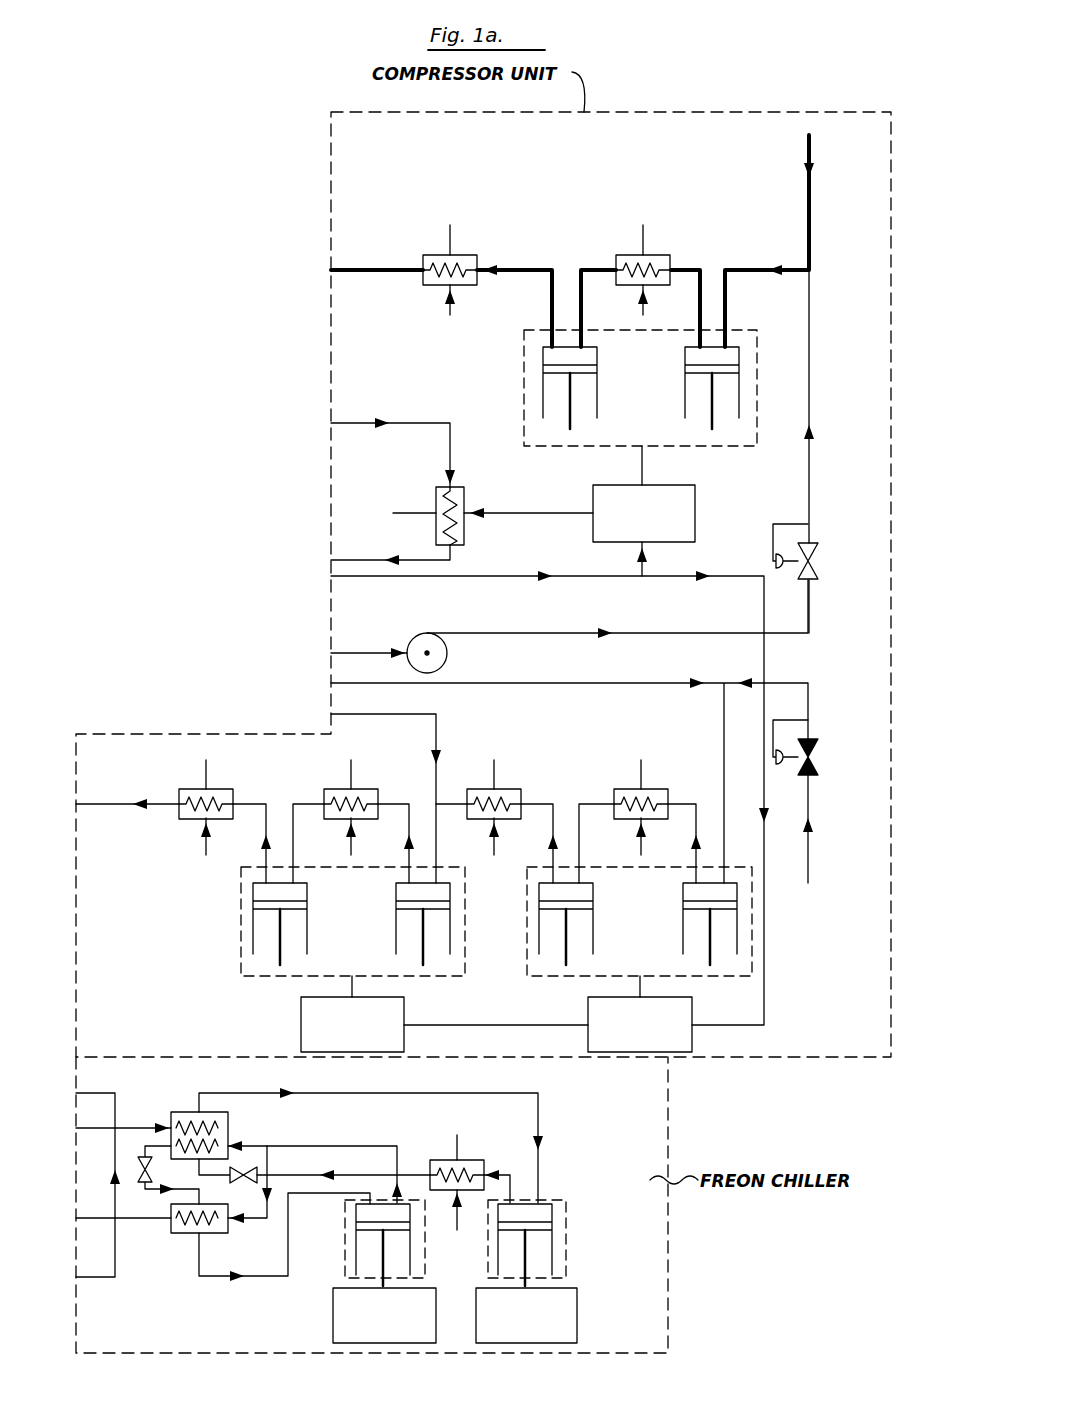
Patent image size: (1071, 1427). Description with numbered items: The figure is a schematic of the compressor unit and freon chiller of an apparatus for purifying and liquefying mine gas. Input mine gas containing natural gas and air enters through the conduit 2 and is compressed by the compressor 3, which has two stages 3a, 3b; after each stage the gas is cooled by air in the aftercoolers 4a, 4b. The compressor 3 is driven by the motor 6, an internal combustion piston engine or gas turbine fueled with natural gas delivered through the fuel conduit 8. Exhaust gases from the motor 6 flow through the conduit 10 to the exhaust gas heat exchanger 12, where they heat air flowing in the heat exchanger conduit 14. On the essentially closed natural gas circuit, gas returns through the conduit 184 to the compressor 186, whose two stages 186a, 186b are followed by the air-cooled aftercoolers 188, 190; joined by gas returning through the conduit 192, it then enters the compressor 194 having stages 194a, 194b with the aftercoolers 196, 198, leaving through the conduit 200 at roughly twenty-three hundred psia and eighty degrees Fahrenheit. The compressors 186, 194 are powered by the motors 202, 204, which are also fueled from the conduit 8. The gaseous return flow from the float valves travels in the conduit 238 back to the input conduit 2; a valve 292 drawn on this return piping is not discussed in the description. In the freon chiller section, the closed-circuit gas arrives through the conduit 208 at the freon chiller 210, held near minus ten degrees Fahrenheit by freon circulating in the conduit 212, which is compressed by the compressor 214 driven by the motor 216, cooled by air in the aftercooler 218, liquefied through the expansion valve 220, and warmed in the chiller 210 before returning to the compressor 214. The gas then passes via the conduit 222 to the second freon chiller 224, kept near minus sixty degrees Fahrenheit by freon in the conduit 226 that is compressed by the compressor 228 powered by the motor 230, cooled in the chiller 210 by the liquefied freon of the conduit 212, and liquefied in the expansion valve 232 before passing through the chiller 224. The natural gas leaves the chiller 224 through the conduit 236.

The conduit 2 is at (374, 268).
The compressor 3 is at (751, 328).
The compressor stage 3a is at (686, 397).
The compressor stage 3b is at (597, 386).
The aftercooler 4a is at (660, 256).
The aftercooler 4b is at (465, 256).
The motor 6 is at (693, 489).
The fuel conduit 8 is at (592, 576).
The conduit 10 is at (516, 515).
The exhaust gas heat exchanger 12 is at (465, 496).
The heat exchanger conduit 14 is at (452, 430).
The conduit 184 is at (385, 683).
The compressor 186 is at (526, 935).
The compressor stage 186a is at (683, 933).
The compressor stage 186b is at (601, 922).
The aftercooler 188 is at (660, 790).
The aftercooler 190 is at (513, 788).
The conduit 192 is at (420, 712).
The compressor 194 is at (236, 933).
The compressor stage 194a is at (397, 933).
The compressor stage 194b is at (307, 922).
The aftercooler 196 is at (338, 788).
The aftercooler 198 is at (188, 822).
The conduit 200 is at (98, 803).
The motor 202 is at (582, 1008).
The motor 204 is at (405, 1008).
The conduit 208 is at (130, 1125).
The freon chiller 210 is at (228, 1118).
The conduit 212 is at (408, 1092).
The compressor 214 is at (553, 1240).
The motor 216 is at (578, 1304).
The aftercooler 218 is at (473, 1158).
The expansion valve 220 is at (253, 1182).
The conduit 222 is at (273, 1139).
The second freon chiller 224 is at (215, 1234).
The conduit 226 is at (358, 1145).
The compressor 228 is at (412, 1253).
The motor 230 is at (333, 1307).
The expansion valve 232 is at (150, 1168).
The conduit 236 is at (136, 1221).
The conduit 238 is at (369, 650).
The valve 292 is at (812, 797).